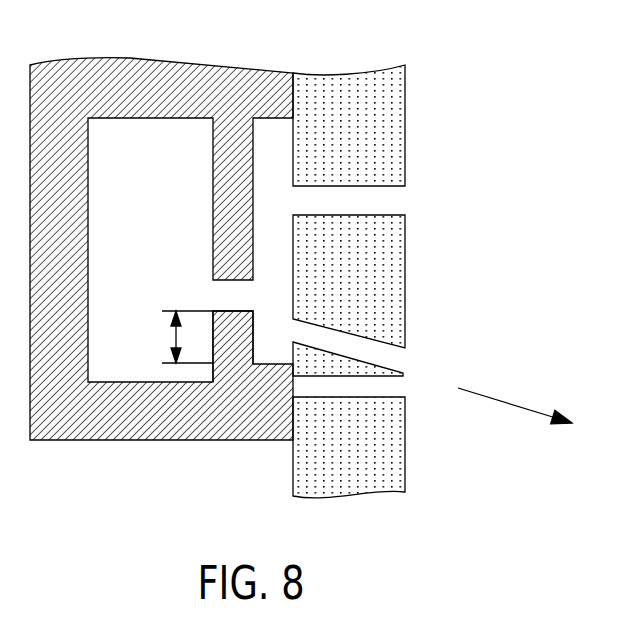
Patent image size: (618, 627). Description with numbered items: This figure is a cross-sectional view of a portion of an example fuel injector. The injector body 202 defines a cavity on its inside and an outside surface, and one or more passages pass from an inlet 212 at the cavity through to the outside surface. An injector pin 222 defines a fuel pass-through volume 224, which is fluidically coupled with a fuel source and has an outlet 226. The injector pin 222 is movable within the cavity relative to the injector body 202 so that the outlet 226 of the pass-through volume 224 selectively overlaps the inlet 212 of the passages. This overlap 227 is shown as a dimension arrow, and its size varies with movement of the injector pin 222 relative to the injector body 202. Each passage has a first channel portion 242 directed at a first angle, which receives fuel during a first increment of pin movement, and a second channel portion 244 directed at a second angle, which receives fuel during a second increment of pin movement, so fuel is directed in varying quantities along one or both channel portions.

The injector pin 222 is at (233, 73).
The injector body 202 is at (392, 148).
The inlet 212 is at (292, 320).
The fuel pass-through volume 224 is at (258, 284).
The outlet 226 is at (292, 328).
The overlap 227 is at (174, 338).
The first channel portion 242 is at (397, 352).
The second channel portion 244 is at (393, 388).